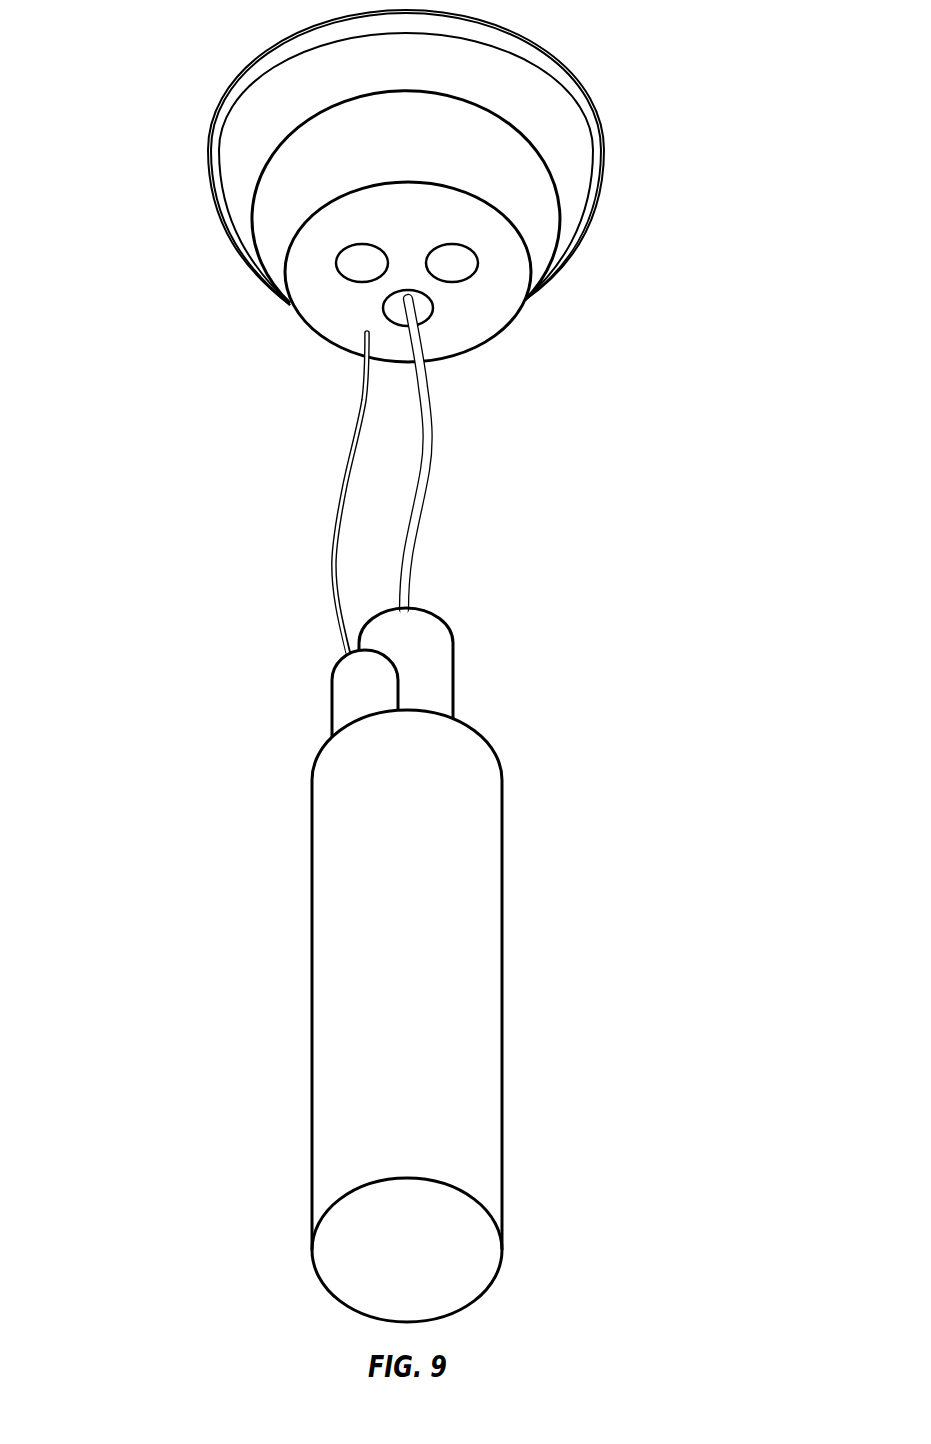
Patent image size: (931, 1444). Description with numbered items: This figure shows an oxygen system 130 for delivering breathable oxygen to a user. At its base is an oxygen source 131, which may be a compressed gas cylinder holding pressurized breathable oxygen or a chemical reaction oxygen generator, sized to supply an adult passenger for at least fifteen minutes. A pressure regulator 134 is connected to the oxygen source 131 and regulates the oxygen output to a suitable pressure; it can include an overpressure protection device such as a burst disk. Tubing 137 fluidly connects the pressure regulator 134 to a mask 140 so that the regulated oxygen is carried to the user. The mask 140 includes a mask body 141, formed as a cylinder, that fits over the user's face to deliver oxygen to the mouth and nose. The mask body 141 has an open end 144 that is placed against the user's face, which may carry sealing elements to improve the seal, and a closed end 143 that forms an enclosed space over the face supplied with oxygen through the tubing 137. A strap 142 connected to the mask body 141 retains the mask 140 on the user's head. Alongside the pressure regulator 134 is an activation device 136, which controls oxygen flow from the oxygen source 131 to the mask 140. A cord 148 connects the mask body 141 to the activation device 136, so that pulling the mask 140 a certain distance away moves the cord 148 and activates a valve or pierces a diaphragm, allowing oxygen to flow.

The oxygen system 130 is at (434, 666).
The oxygen source 131 is at (483, 985).
The pressure regulator 134 is at (456, 683).
The activation device 136 is at (331, 703).
The tubing 137 is at (433, 463).
The mask 140 is at (393, 212).
The mask body 141 is at (532, 237).
The strap 142 is at (595, 94).
The closed end 143 is at (323, 321).
The open end 144 is at (263, 168).
The cord 148 is at (342, 495).